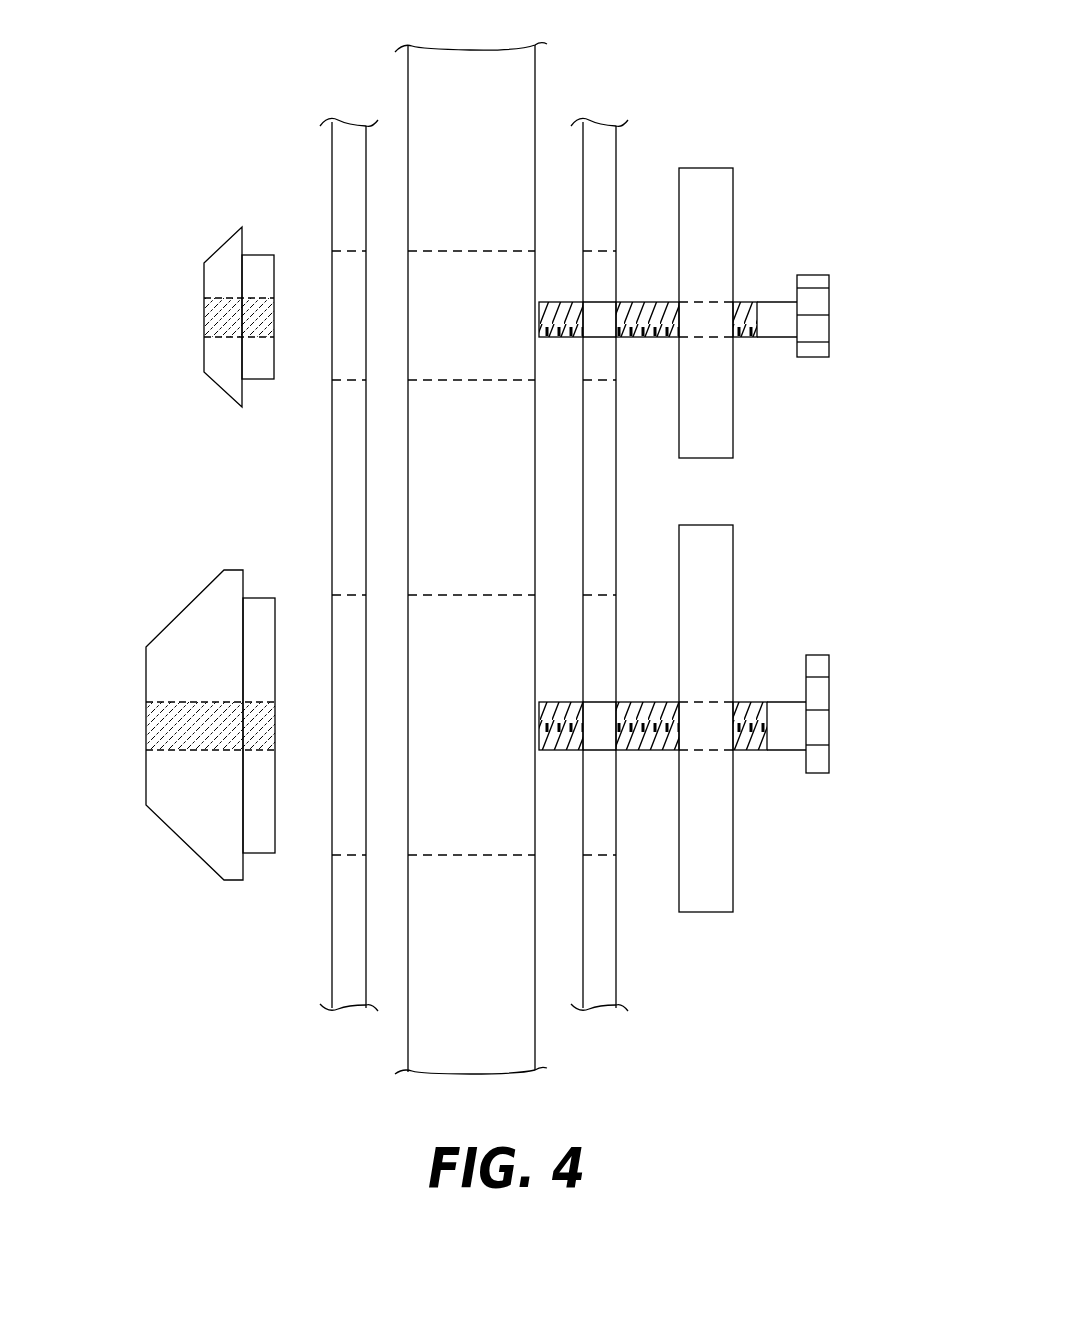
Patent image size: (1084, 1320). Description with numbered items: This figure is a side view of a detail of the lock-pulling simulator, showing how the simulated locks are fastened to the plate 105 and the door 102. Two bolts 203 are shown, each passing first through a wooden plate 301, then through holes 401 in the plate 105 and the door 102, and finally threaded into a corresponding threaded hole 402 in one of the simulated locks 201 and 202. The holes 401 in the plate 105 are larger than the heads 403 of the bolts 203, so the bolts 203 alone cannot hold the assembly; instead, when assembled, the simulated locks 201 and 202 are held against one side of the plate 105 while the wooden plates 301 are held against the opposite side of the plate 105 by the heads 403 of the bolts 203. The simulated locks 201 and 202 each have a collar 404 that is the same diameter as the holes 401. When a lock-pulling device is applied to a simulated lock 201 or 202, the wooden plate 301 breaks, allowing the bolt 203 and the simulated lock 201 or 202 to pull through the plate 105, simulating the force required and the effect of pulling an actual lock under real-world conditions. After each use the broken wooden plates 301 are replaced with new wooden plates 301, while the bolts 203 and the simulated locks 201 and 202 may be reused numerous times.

The door 102 is at (485, 999).
The plate 105 is at (332, 162).
The simulated lock 201 is at (187, 813).
The simulated lock 202 is at (226, 376).
The bolt 203 is at (748, 302).
The wooden plate 301 is at (733, 428).
The hole 401 is at (593, 277).
The threaded hole 402 is at (204, 318).
The head 403 is at (829, 320).
The collar 404 is at (255, 380).